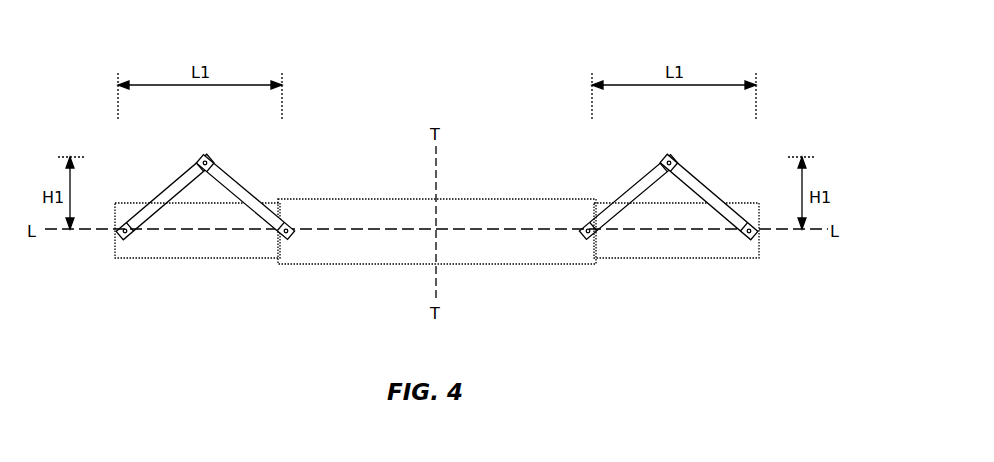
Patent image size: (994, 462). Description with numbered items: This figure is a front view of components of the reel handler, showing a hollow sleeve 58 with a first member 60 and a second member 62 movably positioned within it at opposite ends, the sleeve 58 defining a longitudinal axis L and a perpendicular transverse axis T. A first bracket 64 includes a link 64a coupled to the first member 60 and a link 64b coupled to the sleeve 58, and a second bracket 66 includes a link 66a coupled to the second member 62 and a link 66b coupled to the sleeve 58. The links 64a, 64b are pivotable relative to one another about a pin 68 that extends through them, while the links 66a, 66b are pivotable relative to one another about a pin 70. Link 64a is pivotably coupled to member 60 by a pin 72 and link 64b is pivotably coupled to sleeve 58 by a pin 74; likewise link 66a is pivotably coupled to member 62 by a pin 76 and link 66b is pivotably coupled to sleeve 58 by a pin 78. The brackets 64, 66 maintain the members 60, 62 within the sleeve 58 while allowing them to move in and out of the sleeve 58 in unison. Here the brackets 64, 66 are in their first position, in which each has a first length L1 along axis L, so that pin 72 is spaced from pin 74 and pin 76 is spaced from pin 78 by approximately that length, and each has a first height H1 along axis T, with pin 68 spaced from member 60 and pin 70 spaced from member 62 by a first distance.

The hollow sleeve 58 is at (378, 217).
The first member 60 is at (695, 243).
The second member 62 is at (200, 247).
The first bracket 64 is at (689, 218).
The link 64a is at (705, 193).
The link 64b is at (635, 188).
The second bracket 66 is at (221, 218).
The link 66a is at (167, 193).
The link 66b is at (237, 190).
The pin 68 is at (658, 155).
The pin 70 is at (216, 155).
The pin 72 is at (757, 233).
The pin 74 is at (590, 233).
The pin 76 is at (127, 238).
The pin 78 is at (290, 238).